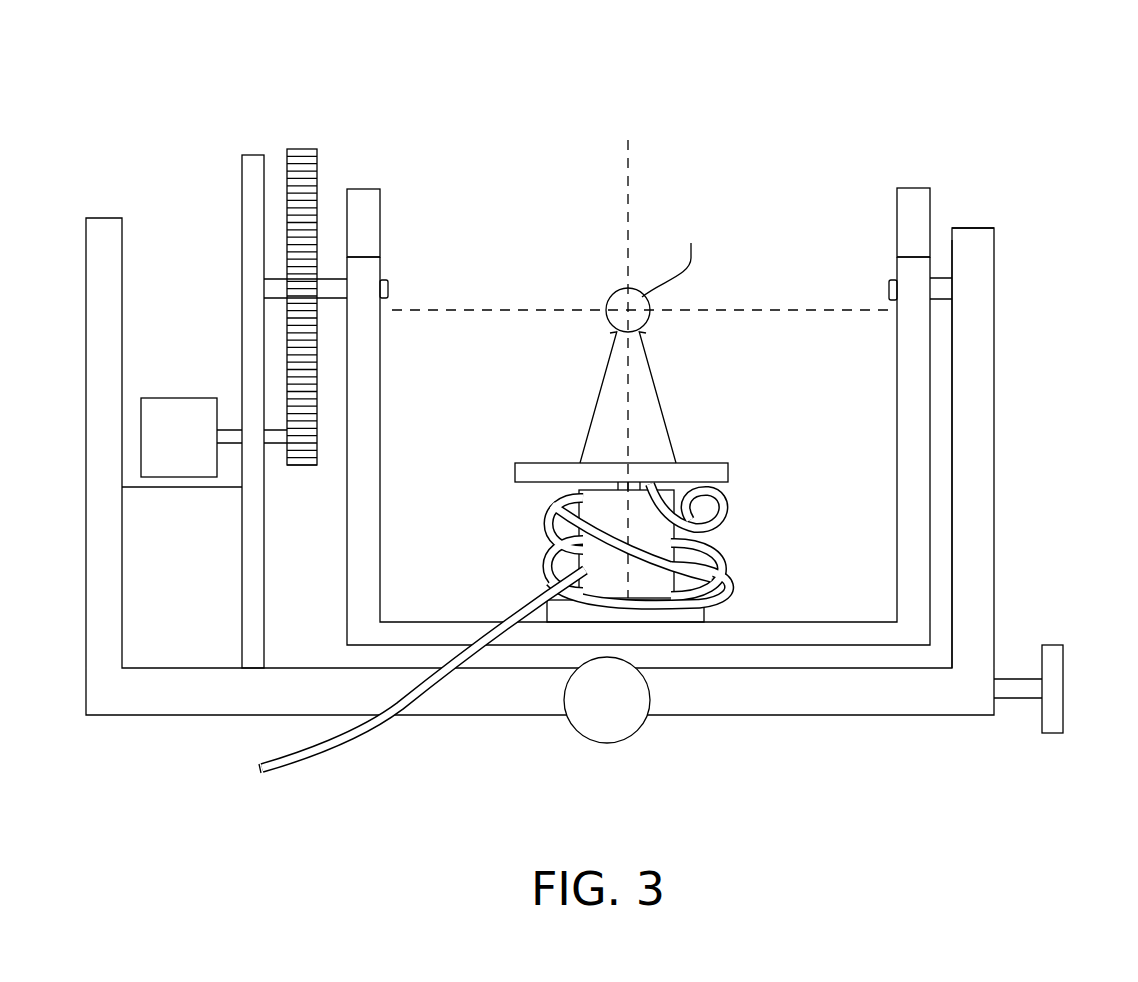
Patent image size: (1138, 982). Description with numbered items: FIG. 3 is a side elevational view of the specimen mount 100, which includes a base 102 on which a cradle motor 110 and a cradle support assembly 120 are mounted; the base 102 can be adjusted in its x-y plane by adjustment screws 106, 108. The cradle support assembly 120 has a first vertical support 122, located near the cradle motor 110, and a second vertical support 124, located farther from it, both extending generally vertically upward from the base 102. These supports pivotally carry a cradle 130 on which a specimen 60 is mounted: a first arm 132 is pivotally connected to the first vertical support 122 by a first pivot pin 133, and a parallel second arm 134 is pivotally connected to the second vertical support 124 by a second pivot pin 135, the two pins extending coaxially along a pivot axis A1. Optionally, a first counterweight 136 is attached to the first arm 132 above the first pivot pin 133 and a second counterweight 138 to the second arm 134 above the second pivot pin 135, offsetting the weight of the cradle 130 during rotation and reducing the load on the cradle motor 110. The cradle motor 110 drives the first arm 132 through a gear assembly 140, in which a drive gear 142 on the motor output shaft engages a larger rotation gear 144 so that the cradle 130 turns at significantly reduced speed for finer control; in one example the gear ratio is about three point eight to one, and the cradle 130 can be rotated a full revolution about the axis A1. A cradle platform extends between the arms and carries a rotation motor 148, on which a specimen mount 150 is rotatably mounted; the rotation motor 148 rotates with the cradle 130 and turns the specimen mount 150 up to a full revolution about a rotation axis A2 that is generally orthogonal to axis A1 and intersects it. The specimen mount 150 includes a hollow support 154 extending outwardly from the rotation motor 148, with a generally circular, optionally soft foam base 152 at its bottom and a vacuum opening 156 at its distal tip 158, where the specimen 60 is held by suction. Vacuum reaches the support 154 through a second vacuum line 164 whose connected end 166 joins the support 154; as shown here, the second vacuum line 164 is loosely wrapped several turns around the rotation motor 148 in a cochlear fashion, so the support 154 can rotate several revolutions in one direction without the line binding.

The mount 100 is at (1037, 53).
The base 102 is at (900, 716).
The adjustment screw 106 is at (634, 731).
The adjustment screw 108 is at (1063, 690).
The cradle motor 110 is at (185, 398).
The cradle support assembly 120 is at (975, 228).
The first vertical support 122 is at (242, 171).
The second vertical support 124 is at (995, 279).
The cradle 130 is at (897, 206).
The first arm 132 is at (382, 207).
The first pivot pin 133 is at (389, 288).
The second arm 134 is at (932, 196).
The second pivot pin 135 is at (888, 290).
The first counterweight 136 is at (361, 189).
The second counterweight 138 is at (912, 188).
The gear assembly 140 is at (301, 149).
The drive gear 142 is at (298, 466).
The rotation gear 144 is at (286, 170).
The rotation motor 148 is at (706, 612).
The specimen mount 150 is at (716, 463).
The base 152 is at (730, 474).
The support 154 is at (668, 388).
The vacuum opening 156 is at (645, 327).
The distal tip 158 is at (611, 326).
The second vacuum line 164 is at (508, 600).
The connected end 166 is at (678, 452).
The specimen 60 is at (616, 298).
The pivot axis A1 is at (752, 303).
The rotation axis A2 is at (628, 208).